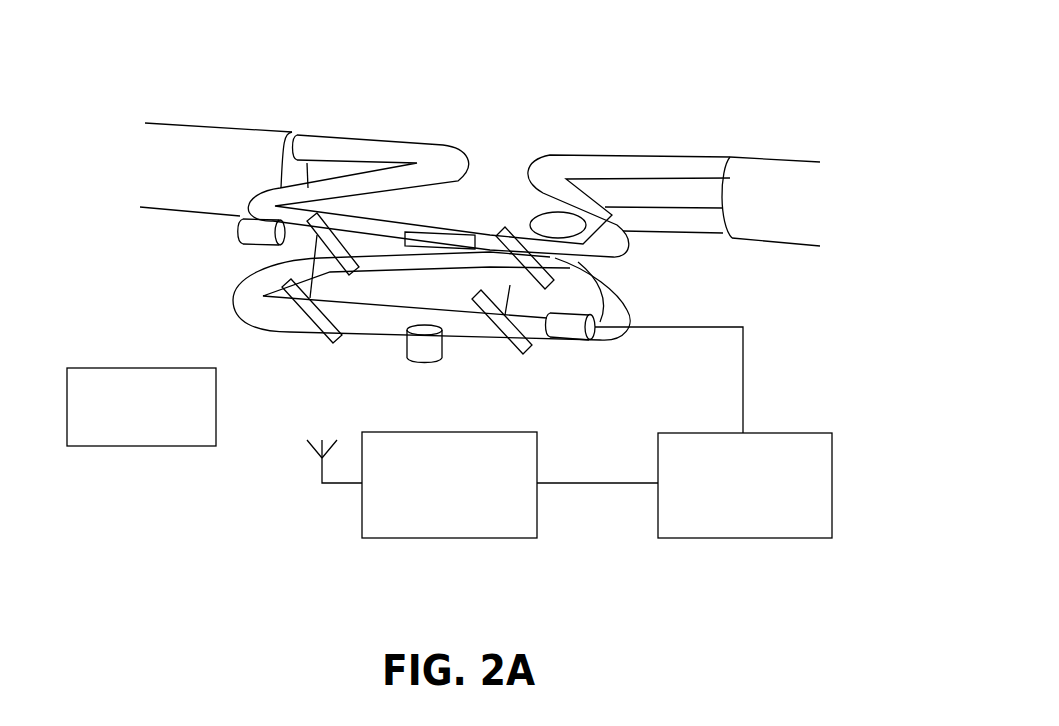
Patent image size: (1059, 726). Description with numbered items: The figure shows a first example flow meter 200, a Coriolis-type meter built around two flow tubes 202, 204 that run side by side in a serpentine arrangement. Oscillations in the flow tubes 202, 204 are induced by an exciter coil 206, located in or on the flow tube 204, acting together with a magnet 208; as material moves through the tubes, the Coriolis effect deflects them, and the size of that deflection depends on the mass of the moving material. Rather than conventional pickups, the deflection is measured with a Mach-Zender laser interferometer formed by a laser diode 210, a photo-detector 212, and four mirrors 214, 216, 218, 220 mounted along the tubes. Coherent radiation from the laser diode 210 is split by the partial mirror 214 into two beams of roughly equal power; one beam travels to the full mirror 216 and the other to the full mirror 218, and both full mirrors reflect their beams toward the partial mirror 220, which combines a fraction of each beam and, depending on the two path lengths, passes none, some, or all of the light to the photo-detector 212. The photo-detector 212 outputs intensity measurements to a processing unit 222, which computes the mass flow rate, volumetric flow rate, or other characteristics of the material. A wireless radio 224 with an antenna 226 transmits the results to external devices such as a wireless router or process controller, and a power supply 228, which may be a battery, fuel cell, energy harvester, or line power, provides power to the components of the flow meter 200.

The flow meter 200 is at (532, 88).
The flow tube 202 is at (652, 153).
The flow tube 204 is at (687, 234).
The exciter coil 206 is at (420, 362).
The magnet 208 is at (468, 230).
The laser diode 210 is at (240, 236).
The photo-detector 212 is at (567, 341).
The partial mirror 214 is at (330, 233).
The full mirror 216 is at (548, 222).
The full mirror 218 is at (300, 317).
The partial mirror 220 is at (483, 333).
The processing unit 222 is at (745, 540).
The wireless radio 224 is at (447, 540).
The antenna 226 is at (307, 450).
The power supply 228 is at (140, 447).